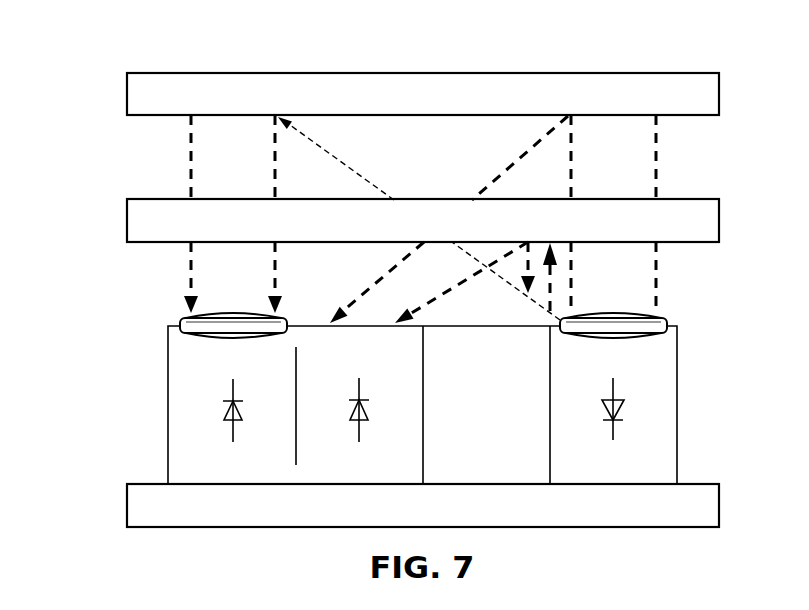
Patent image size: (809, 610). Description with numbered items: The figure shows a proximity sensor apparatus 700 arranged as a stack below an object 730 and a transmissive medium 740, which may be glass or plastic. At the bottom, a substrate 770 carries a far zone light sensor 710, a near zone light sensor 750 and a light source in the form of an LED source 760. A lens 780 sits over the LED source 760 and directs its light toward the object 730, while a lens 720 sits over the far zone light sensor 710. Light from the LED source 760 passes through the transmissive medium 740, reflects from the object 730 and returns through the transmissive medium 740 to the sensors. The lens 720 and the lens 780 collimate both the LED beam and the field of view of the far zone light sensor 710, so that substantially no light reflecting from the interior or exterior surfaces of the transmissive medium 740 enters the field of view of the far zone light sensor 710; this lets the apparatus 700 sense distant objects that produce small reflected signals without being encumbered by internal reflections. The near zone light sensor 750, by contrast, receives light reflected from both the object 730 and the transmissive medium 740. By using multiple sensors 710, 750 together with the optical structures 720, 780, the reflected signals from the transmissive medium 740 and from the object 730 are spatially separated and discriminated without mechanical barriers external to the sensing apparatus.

The proximity sensor apparatus 700 is at (606, 48).
The far zone light sensor 710 is at (228, 408).
The lens 720 is at (255, 341).
The object 730 is at (127, 88).
The transmissive medium 740 is at (127, 218).
The near zone light sensor 750 is at (355, 408).
The LED source 760 is at (622, 410).
The substrate 770 is at (127, 505).
The lens 780 is at (590, 340).